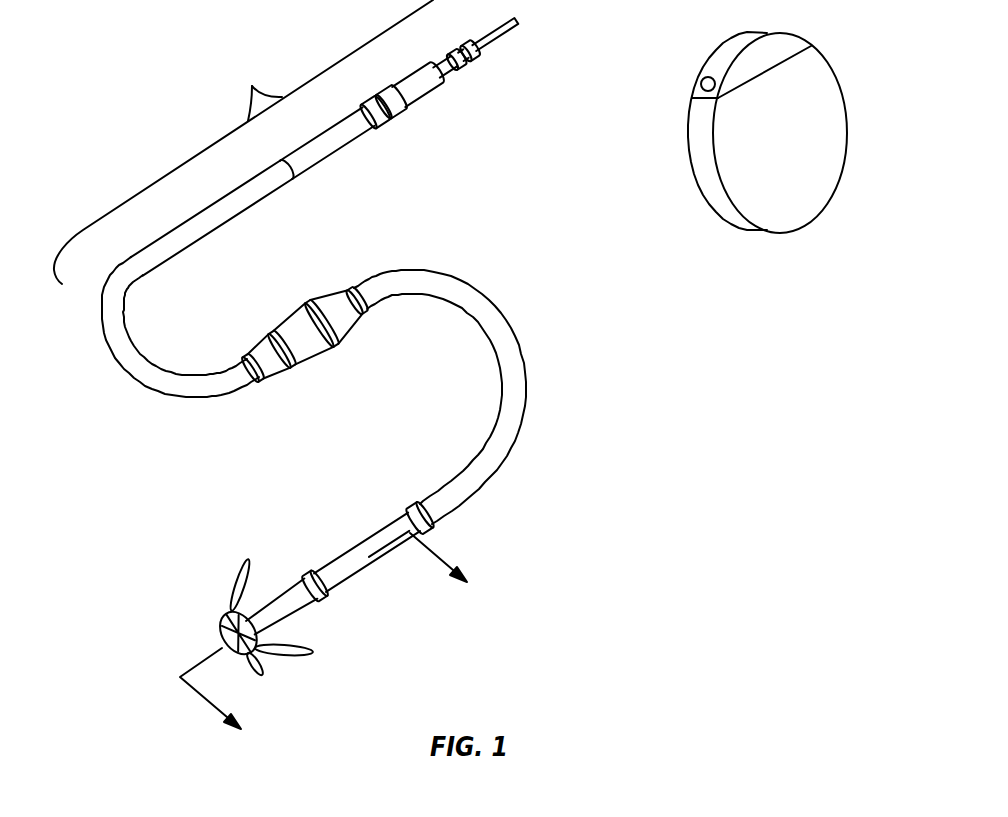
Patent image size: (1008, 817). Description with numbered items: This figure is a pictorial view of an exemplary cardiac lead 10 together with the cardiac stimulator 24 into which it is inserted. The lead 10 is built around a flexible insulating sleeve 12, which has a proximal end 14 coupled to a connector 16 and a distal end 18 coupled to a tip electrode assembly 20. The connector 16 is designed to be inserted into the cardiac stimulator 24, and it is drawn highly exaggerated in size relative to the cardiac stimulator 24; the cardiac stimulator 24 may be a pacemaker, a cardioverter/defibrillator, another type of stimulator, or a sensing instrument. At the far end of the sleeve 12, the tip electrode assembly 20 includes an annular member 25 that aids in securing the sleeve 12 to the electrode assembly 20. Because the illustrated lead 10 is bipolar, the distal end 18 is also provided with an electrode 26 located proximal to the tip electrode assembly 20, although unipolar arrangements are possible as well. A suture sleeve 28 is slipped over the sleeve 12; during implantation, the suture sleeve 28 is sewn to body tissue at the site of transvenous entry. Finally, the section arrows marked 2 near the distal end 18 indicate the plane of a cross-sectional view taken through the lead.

The catheter system 10 is at (252, 86).
The curved proximal tubing section 12 is at (131, 375).
The outer sheath 14 is at (244, 209).
The proximal connector assembly 16 is at (334, 153).
The catheter shaft 18 is at (366, 536).
The distal tip assembly 20 is at (279, 709).
The disc-shaped unit 24 is at (730, 220).
The distal band 25 is at (312, 572).
The proximal band 26 is at (418, 500).
The tapered hub 28 is at (314, 358).
The section line 2- 2 is at (332, 640).